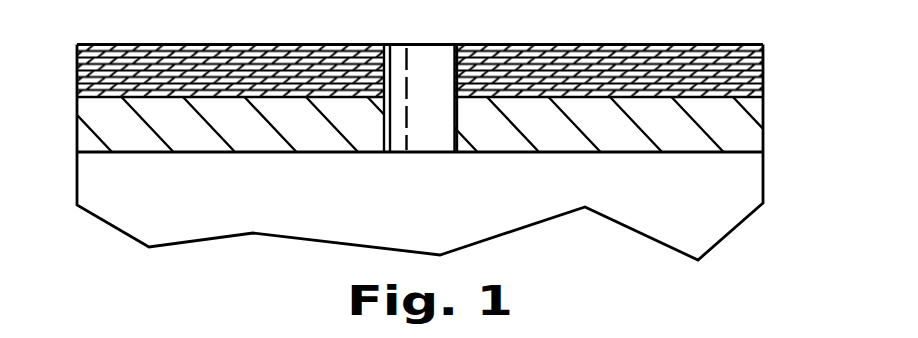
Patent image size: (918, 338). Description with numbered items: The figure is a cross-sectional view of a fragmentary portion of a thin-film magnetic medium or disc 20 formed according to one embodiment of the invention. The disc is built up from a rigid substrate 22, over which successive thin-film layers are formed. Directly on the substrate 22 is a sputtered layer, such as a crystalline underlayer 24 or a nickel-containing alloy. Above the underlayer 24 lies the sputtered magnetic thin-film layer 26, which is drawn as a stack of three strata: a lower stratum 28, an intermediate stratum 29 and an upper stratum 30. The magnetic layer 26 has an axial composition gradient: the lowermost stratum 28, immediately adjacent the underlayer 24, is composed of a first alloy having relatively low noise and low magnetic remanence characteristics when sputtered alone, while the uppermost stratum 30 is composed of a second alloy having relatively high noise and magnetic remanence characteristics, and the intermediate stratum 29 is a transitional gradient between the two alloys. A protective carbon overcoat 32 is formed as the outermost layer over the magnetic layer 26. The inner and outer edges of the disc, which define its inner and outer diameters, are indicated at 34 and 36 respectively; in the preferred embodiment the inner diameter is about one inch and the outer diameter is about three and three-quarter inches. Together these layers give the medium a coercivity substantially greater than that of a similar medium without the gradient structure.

The thin-film medium or disc 20 is at (765, 155).
The rigid substrate 22 is at (708, 227).
The crystalline underlayer 24 is at (492, 145).
The magnetic thin-film layer 26 is at (765, 90).
The lower stratum 28 is at (332, 88).
The intermediate stratum 29 is at (293, 78).
The upper stratum 30 is at (253, 62).
The protective carbon overcoat 32 is at (192, 52).
The inner edge 34 is at (390, 132).
The outer edge 36 is at (77, 110).